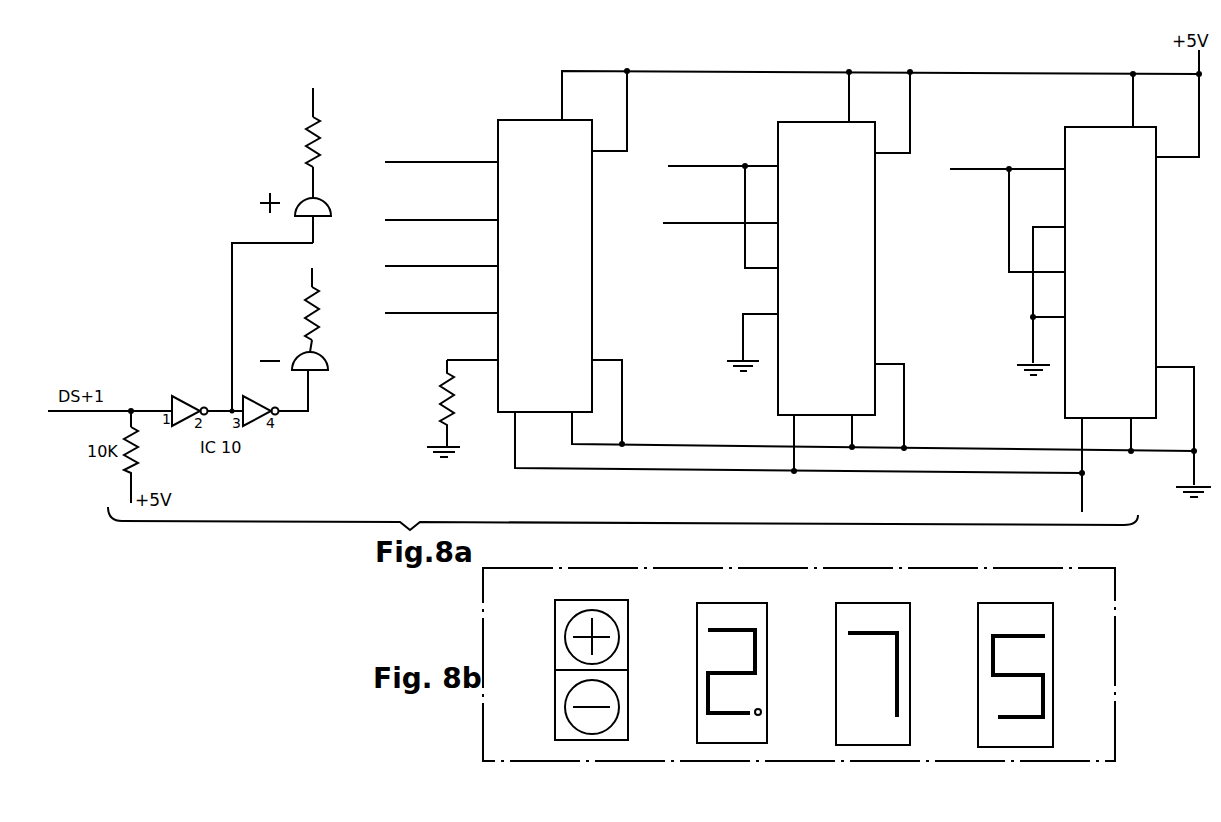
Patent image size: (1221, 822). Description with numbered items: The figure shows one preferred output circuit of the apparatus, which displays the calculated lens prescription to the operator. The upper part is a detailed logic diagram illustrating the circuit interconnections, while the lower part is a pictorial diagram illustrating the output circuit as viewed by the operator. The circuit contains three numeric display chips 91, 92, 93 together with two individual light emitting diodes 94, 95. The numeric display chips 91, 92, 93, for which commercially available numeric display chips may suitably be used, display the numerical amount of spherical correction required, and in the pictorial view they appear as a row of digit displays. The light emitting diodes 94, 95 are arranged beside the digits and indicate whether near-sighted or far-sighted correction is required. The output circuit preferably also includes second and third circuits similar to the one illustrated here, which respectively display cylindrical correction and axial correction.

In FIG. 8A, the numeric display chip 91 is at (1156, 254).
In FIG. 8B, the numeric display chip 91 is at (1055, 678).
In FIG. 8A, the numeric display chip 92 is at (875, 250).
In FIG. 8B, the numeric display chip 92 is at (912, 680).
In FIG. 8A, the numeric display chip 93 is at (592, 247).
In FIG. 8B, the numeric display chip 93 is at (768, 685).
In FIG. 8A, the light emitting diode 94 is at (322, 206).
In FIG. 8B, the light emitting diode 94 is at (628, 652).
In FIG. 8A, the light emitting diode 95 is at (318, 353).
In FIG. 8B, the light emitting diode 95 is at (628, 683).